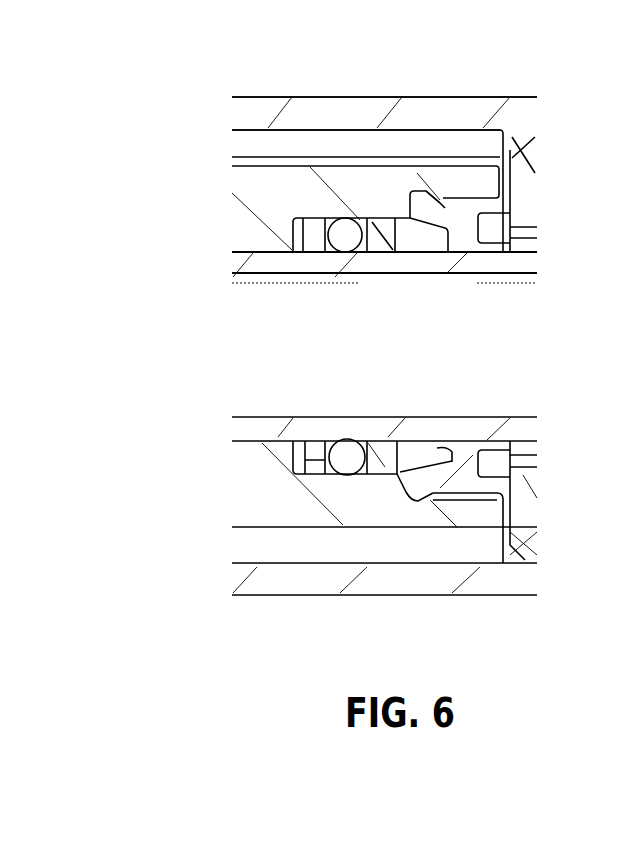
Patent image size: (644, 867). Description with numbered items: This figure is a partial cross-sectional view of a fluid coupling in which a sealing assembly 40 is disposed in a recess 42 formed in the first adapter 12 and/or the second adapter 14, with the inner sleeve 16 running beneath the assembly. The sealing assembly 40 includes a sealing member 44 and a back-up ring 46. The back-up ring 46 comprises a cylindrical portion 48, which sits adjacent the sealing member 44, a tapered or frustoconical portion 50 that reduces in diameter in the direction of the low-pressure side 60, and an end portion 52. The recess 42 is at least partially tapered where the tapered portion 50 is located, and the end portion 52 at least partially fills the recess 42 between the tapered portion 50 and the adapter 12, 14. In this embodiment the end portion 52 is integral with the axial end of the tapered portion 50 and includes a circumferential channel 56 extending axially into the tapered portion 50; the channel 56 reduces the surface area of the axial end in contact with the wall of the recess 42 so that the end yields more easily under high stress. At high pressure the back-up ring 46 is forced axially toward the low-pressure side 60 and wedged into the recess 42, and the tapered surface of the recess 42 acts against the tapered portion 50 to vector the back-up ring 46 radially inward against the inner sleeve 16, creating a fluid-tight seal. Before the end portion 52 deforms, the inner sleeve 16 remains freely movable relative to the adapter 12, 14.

The first adapter 12 is at (262, 230).
The second adapter 14 is at (384, 113).
The inner sleeve 16 is at (258, 255).
The sealing assembly 40 is at (277, 205).
The recess 42 is at (317, 218).
The sealing member 44 is at (347, 232).
The back-up ring 46 is at (443, 208).
The cylindrical portion 48 is at (380, 228).
The tapered portion 50 is at (412, 230).
The end portion 52 is at (465, 232).
The circumferential channel 56 is at (437, 240).
The low-pressure side 60 is at (490, 273).